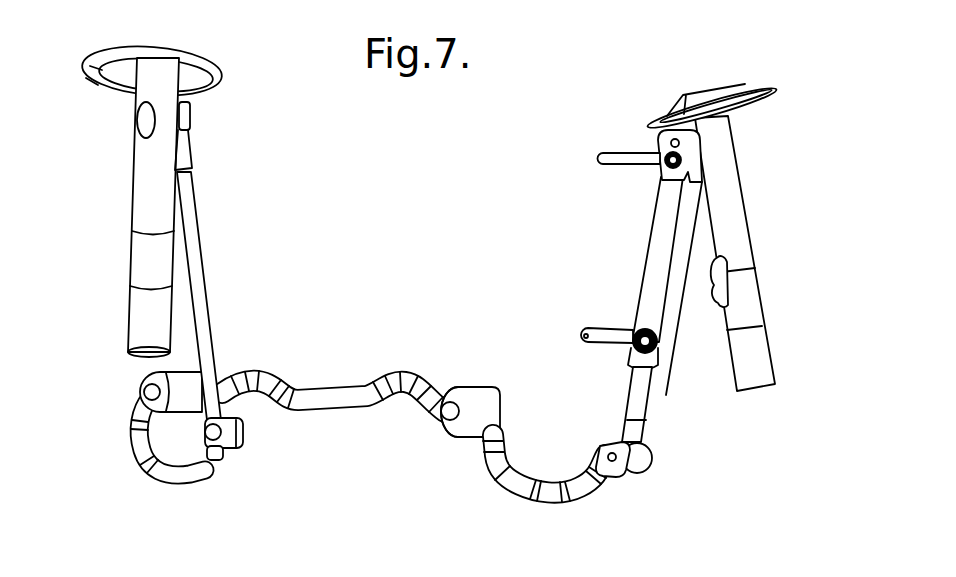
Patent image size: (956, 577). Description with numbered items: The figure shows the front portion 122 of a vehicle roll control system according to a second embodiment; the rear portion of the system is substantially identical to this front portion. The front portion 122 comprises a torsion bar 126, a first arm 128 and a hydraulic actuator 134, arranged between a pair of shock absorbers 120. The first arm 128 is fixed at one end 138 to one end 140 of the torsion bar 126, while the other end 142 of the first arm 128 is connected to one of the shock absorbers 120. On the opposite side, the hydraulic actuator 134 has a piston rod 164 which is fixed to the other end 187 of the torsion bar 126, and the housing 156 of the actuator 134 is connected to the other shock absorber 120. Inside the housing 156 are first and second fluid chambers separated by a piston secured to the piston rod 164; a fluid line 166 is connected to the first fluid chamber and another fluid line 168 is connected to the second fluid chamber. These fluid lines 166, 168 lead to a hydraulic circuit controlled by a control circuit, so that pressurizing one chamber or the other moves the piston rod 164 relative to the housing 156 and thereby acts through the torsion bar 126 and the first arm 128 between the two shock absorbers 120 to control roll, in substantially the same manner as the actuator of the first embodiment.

The shock absorber 120 is at (143, 197).
The front portion 122 is at (411, 326).
The torsion bar 126 is at (353, 403).
The first arm 128 is at (207, 283).
The hydraulic actuator 134 is at (624, 217).
The one end of the first arm 138 is at (195, 450).
The one end of the torsion bar 140 is at (240, 450).
The other end of the first arm 142 is at (192, 119).
The housing 156 is at (648, 281).
The piston rod 164 is at (648, 397).
The fluid line 166 is at (622, 152).
The fluid line 168 is at (600, 337).
The other end of the torsion bar 187 is at (622, 472).